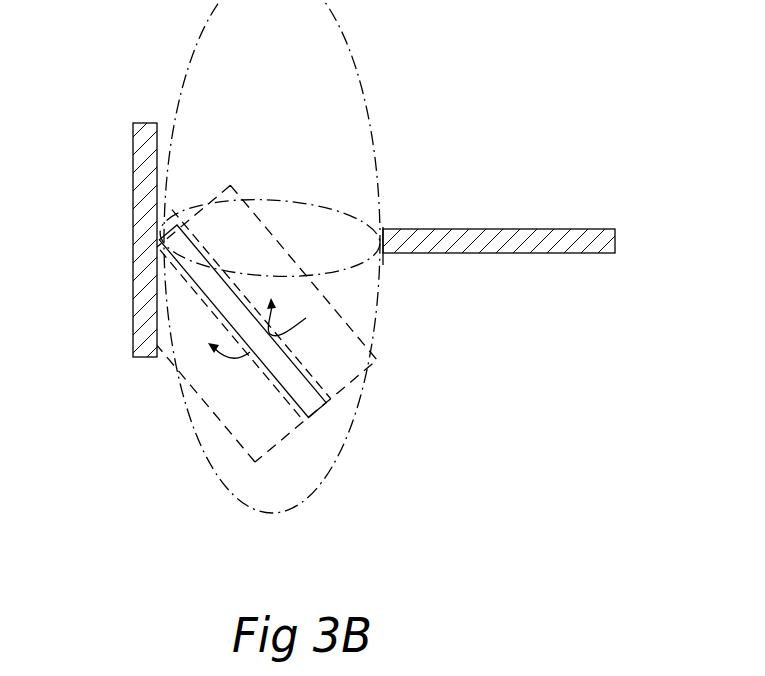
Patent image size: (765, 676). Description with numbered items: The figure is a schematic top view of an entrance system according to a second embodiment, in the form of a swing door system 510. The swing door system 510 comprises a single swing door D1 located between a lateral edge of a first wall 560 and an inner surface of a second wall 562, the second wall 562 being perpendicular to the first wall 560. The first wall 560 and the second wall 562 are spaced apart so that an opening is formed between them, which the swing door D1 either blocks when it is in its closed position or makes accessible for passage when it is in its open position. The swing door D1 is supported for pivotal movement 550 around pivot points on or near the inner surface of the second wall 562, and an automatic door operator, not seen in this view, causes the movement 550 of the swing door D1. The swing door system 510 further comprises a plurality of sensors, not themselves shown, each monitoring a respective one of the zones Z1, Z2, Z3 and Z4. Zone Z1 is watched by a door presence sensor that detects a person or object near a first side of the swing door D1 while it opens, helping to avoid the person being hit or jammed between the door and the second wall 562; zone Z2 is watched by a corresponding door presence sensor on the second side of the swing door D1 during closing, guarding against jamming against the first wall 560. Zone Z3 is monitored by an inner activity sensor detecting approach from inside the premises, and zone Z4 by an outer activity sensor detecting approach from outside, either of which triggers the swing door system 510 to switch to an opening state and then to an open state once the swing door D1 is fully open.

The swing door system 510 is at (444, 66).
The pivotal movement 550 is at (306, 318).
The first wall 560 is at (465, 238).
The second wall 562 is at (157, 198).
The swing door D1 is at (320, 408).
The zone Z1 is at (240, 431).
The zone Z2 is at (315, 363).
The zone Z3 is at (285, 497).
The zone Z4 is at (284, 43).